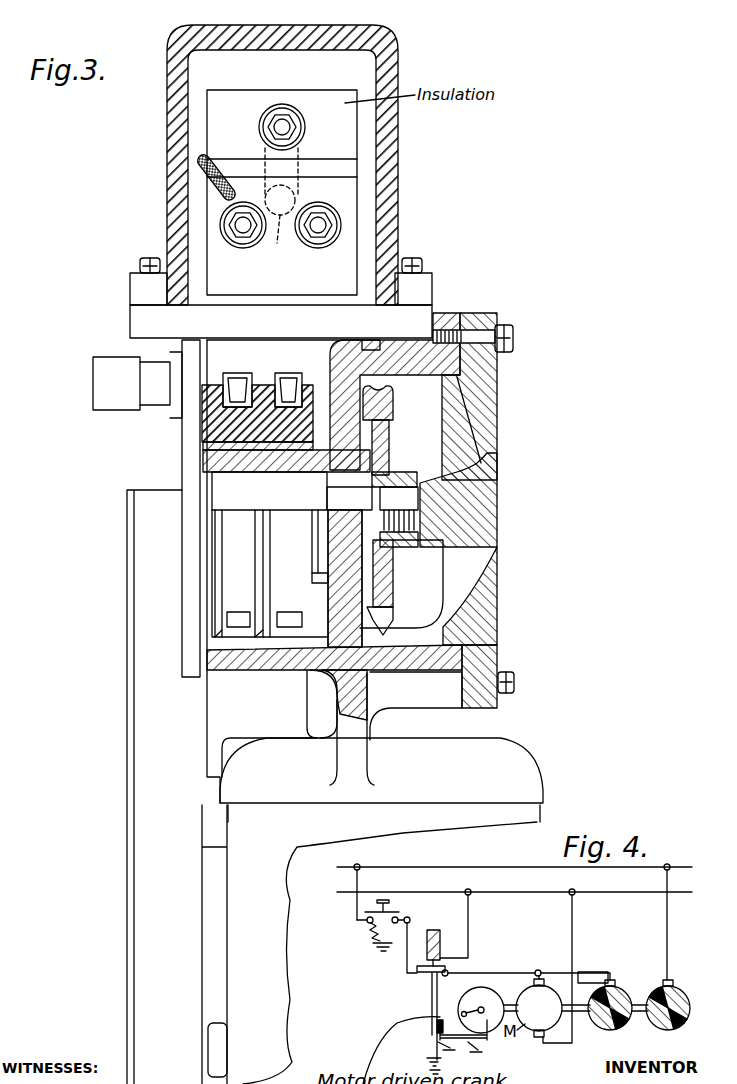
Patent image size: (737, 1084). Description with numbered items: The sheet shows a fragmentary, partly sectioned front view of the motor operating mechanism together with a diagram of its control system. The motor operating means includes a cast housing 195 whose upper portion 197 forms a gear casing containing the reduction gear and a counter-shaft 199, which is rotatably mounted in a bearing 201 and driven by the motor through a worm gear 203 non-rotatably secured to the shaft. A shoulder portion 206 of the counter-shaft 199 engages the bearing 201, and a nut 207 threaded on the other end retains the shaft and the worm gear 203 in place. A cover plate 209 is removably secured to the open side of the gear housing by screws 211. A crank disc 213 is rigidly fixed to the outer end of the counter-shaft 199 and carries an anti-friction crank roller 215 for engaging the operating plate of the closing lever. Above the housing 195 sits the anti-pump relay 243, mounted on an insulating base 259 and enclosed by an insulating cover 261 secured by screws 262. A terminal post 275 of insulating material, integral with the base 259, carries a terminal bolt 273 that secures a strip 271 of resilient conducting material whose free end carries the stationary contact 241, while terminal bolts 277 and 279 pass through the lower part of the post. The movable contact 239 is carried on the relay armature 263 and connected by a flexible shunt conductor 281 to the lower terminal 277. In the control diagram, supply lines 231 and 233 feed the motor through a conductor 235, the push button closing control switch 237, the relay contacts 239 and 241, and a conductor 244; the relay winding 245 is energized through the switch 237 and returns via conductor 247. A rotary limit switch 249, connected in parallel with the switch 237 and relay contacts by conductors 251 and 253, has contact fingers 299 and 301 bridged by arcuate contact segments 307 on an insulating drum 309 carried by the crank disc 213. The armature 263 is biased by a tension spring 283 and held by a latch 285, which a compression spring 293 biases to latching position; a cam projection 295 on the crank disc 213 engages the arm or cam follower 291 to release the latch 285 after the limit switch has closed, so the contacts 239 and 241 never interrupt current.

In FIG. 3, the cover 261 is at (388, 42).
In FIG. 3, the terminal post 275 is at (308, 92).
In FIG. 3, the terminal bolt 273 is at (292, 128).
In FIG. 3, the strip of resilient conducting material 271 is at (300, 152).
In FIG. 3, the stationary contact 241 is at (283, 247).
In FIG. 4, the stationary contact 241 is at (425, 976).
In FIG. 3, the terminal bolt 277 is at (236, 243).
In FIG. 3, the terminal bolt 279 is at (315, 243).
In FIG. 3, the flexible shunt conductor 281 is at (196, 161).
In FIG. 3, the anti-pump relay 243 is at (453, 162).
In FIG. 4, the anti-pump relay 243 is at (447, 919).
In FIG. 3, the screws 262 is at (140, 262).
In FIG. 3, the base 259 is at (138, 320).
In FIG. 3, the cover plate 209 is at (490, 401).
In FIG. 3, the screws 211 is at (515, 338).
In FIG. 3, the nut 207 is at (478, 463).
In FIG. 3, the worm gear 203 is at (390, 406).
In FIG. 3, the counter-shaft 199 is at (380, 500).
In FIG. 3, the shoulder portion 206 is at (203, 458).
In FIG. 3, the drum 309 is at (315, 412).
In FIG. 3, the contact finger 299 is at (233, 372).
In FIG. 4, the contact finger 299 is at (593, 978).
In FIG. 3, the contact finger 301 is at (290, 372).
In FIG. 4, the contact finger 301 is at (672, 982).
In FIG. 3, the bearing 201 is at (292, 491).
In FIG. 3, the crank roller 215 is at (108, 398).
In FIG. 4, the crank roller 215 is at (488, 1010).
In FIG. 3, the crank disc 213 is at (183, 655).
In FIG. 4, the crank disc 213 is at (480, 1037).
In FIG. 3, the upper portion of the housing 197 is at (440, 710).
In FIG. 3, the housing 195 is at (227, 890).
In FIG. 4, the supply line 231 is at (412, 867).
In FIG. 4, the supply line 233 is at (404, 892).
In FIG. 4, the conductor 235 is at (357, 885).
In FIG. 4, the push button closing control switch 237 is at (367, 917).
In FIG. 4, the winding 245 is at (445, 929).
In FIG. 4, the armature 263 is at (440, 937).
In FIG. 4, the conductor 247 is at (470, 953).
In FIG. 4, the movable contact 239 is at (450, 969).
In FIG. 4, the conductor 244 is at (574, 918).
In FIG. 4, the conductor 253 is at (668, 921).
In FIG. 4, the conductor 251 is at (588, 973).
In FIG. 4, the limit switch 249 is at (658, 982).
In FIG. 4, the bridging contact segment 307 is at (622, 1026).
In FIG. 4, the cam projection 295 is at (437, 1028).
In FIG. 4, the latch 285 is at (412, 1060).
In FIG. 4, the arm or cam follower 291 is at (456, 1055).
In FIG. 4, the compression spring 293 is at (480, 1052).
In FIG. 4, the tension spring 283 is at (447, 1072).